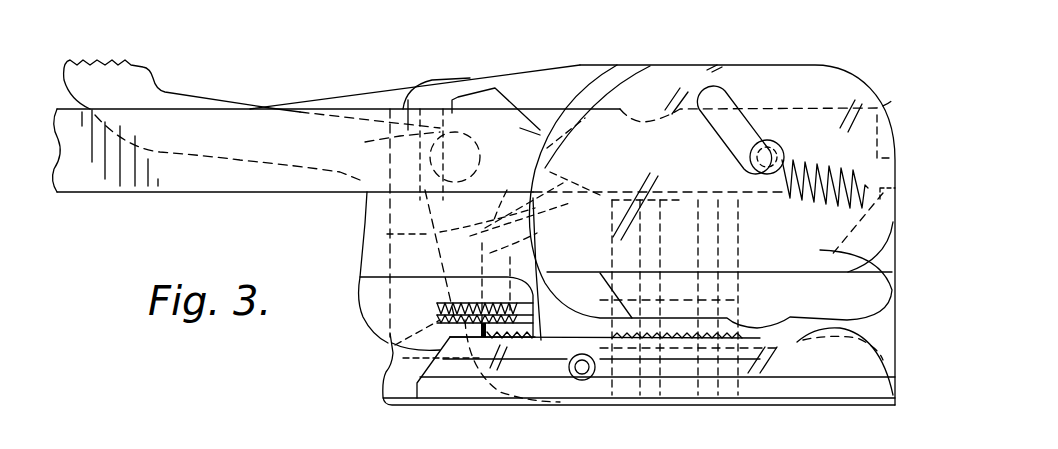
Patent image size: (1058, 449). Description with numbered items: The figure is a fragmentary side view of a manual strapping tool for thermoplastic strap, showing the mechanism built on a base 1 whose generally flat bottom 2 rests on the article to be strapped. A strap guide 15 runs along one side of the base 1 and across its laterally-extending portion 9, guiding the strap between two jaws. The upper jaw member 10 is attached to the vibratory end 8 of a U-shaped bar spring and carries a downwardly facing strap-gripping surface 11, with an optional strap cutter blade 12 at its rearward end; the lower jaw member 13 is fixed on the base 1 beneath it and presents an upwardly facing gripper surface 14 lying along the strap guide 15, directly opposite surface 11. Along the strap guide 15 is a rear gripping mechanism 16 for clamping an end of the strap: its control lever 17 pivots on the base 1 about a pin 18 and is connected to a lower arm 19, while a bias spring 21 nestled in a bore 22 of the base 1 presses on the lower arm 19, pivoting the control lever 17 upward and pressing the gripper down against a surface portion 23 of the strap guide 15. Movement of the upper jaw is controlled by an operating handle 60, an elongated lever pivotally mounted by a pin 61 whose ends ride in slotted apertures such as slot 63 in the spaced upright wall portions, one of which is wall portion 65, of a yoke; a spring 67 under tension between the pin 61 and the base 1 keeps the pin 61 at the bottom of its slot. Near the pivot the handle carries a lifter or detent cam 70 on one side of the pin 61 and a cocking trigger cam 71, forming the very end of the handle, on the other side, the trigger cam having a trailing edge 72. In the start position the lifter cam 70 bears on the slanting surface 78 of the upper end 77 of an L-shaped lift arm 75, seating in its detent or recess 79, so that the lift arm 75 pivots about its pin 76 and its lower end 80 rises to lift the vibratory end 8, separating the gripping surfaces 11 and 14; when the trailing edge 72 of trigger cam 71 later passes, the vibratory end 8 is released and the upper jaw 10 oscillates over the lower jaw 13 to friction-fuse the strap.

The base 1 is at (878, 404).
The bottom 2 is at (786, 398).
The vibratory end 8 is at (735, 232).
The laterally-extending portion 9 is at (853, 365).
The upper jaw member 10 is at (733, 303).
The strap-gripping surface 11 is at (793, 310).
The strap cutter blade 12 is at (604, 264).
The lower jaw member 13 is at (783, 358).
The gripper surface 14 is at (687, 330).
The strap guide 15 is at (857, 322).
The rear gripping mechanism 16 is at (378, 222).
The control lever 17 is at (117, 83).
The pin 18 is at (405, 155).
The lower arm 19 is at (377, 291).
The bias spring 21 is at (387, 343).
The bore 22 is at (515, 235).
The surface portion 23 is at (649, 361).
The operating handle 60 is at (113, 182).
The pin 61 is at (770, 140).
The slotted aperture 63 is at (728, 130).
The upright wall portion 65 is at (757, 85).
The spring 67 is at (808, 155).
The lifter or detent cam 70 is at (548, 160).
The cocking trigger cam 71 is at (895, 155).
The trailing edge 72 is at (877, 115).
The lift arm 75 is at (548, 228).
The pin 76 is at (575, 380).
The upper end 77 is at (472, 96).
The slanting surface 78 is at (524, 92).
The detent or recess 79 is at (512, 132).
The lower end 80 is at (595, 317).